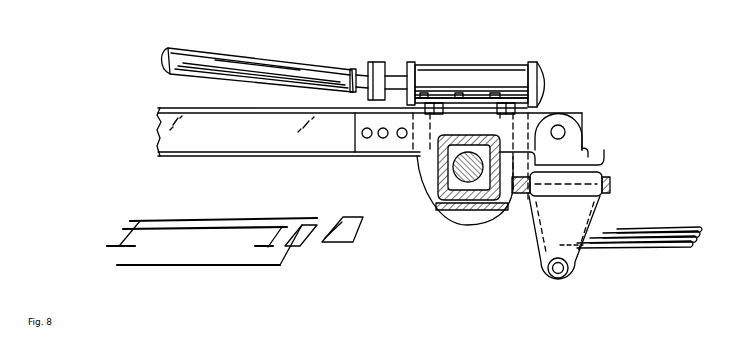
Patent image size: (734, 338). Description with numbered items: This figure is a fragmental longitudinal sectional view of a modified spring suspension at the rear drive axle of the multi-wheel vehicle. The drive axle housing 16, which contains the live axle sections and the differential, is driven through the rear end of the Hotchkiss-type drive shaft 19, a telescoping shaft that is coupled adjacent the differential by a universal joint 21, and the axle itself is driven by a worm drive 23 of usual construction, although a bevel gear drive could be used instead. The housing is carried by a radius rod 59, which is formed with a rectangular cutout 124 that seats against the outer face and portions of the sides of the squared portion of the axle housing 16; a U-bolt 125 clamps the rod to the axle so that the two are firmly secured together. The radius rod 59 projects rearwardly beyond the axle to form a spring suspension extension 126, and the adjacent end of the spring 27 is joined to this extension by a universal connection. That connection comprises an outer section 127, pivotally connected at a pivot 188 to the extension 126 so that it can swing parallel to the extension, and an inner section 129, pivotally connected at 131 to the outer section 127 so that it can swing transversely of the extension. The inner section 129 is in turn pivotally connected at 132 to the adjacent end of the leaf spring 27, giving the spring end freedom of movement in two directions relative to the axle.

The drive axle housing 16 is at (443, 163).
The drive shaft 19 is at (333, 71).
The universal joint 21 is at (380, 64).
The worm drive 23 is at (453, 80).
The springs 27 is at (643, 250).
The rail beam 59 is at (283, 133).
The rectangular cutouts 124 is at (503, 142).
The U-bolts 125 is at (500, 118).
The spring suspension extensions 126 is at (587, 122).
The outer sections 127 is at (577, 168).
The inner sections 129 is at (577, 220).
The pivotal connection 131 is at (610, 178).
The pivotal connection 132 is at (558, 287).
The pivot pin 188 is at (560, 132).